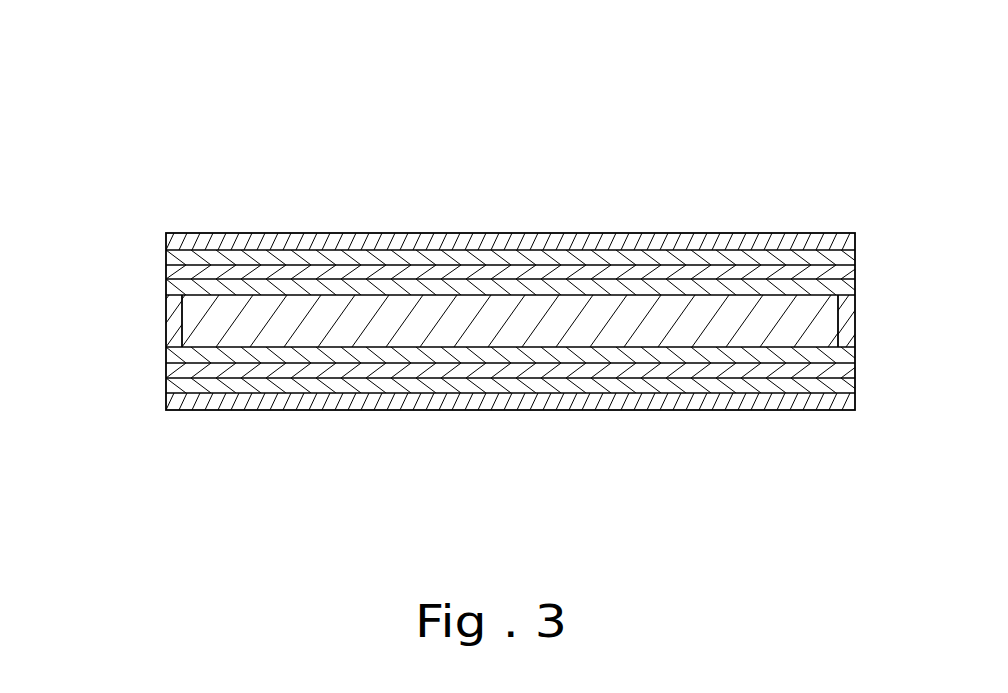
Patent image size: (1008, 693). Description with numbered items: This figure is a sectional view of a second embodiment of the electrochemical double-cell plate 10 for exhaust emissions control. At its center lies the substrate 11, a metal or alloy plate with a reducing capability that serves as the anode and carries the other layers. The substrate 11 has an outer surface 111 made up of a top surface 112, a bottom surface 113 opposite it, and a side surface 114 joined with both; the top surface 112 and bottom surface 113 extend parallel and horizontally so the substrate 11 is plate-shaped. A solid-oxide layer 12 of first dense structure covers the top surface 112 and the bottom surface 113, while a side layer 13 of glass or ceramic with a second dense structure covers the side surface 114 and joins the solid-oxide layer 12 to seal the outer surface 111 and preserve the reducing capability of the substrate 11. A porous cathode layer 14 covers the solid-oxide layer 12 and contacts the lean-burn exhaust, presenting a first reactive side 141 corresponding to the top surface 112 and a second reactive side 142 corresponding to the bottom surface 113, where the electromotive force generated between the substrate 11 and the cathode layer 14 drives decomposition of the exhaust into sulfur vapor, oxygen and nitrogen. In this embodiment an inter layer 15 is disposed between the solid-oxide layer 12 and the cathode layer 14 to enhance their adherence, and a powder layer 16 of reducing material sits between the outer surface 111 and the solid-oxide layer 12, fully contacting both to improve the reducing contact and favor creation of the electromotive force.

The electrochemical double-cell plate 10 is at (254, 150).
The substrate 11 is at (712, 340).
The outer surface 111 is at (441, 320).
The top surface 112 is at (250, 285).
The bottom surface 113 is at (250, 355).
The side surface 114 is at (160, 325).
The solid-oxide layer 12 is at (727, 272).
The side layer 13 is at (848, 312).
The cathode layer 14 is at (515, 233).
The first reactive side 141 is at (404, 216).
The second reactive side 142 is at (382, 427).
The inter layer 15 is at (632, 257).
The powder layer 16 is at (572, 288).